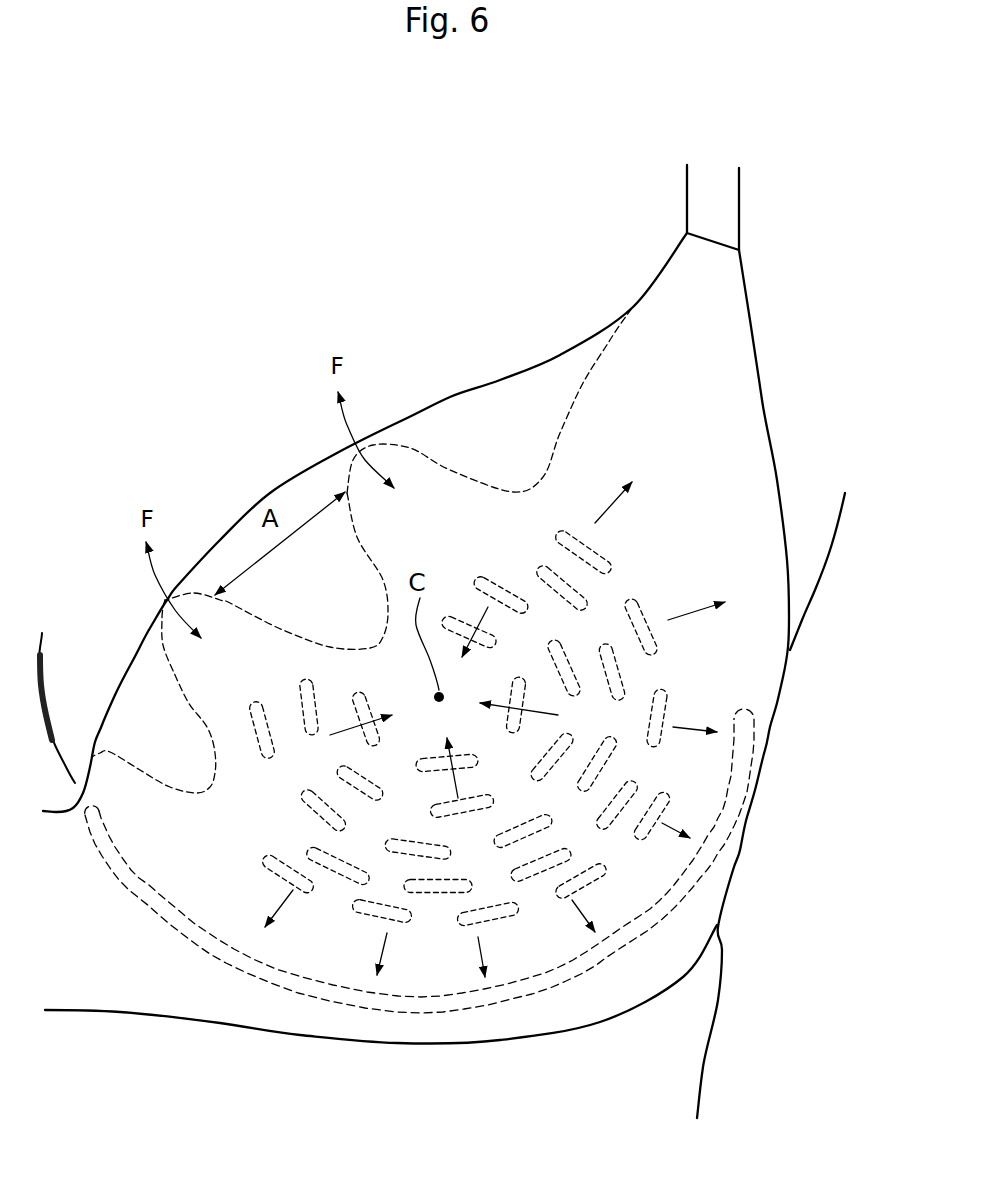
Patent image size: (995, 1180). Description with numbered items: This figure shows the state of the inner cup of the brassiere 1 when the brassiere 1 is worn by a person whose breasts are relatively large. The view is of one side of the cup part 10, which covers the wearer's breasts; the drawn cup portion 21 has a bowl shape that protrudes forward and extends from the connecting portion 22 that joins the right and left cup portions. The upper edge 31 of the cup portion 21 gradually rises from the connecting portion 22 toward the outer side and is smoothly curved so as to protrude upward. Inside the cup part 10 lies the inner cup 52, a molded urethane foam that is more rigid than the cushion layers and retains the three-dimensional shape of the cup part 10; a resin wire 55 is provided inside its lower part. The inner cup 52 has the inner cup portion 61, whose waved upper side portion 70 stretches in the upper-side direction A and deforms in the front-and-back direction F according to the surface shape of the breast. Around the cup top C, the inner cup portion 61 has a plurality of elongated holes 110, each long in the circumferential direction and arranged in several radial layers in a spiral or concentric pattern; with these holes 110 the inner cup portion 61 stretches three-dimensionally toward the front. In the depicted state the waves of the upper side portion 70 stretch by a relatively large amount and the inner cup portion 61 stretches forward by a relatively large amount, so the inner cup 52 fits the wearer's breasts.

The brassiere 1 is at (567, 327).
The cup part 10 is at (763, 407).
The cup portion 21 is at (717, 357).
The connecting portion 22 is at (70, 937).
The upper edge 31 is at (333, 453).
The inner cup 52 is at (748, 470).
The resin wire 55 is at (563, 980).
The inner cup portion 61 is at (738, 622).
The upper side portion 70 is at (412, 448).
The elongated holes 110 is at (462, 922).